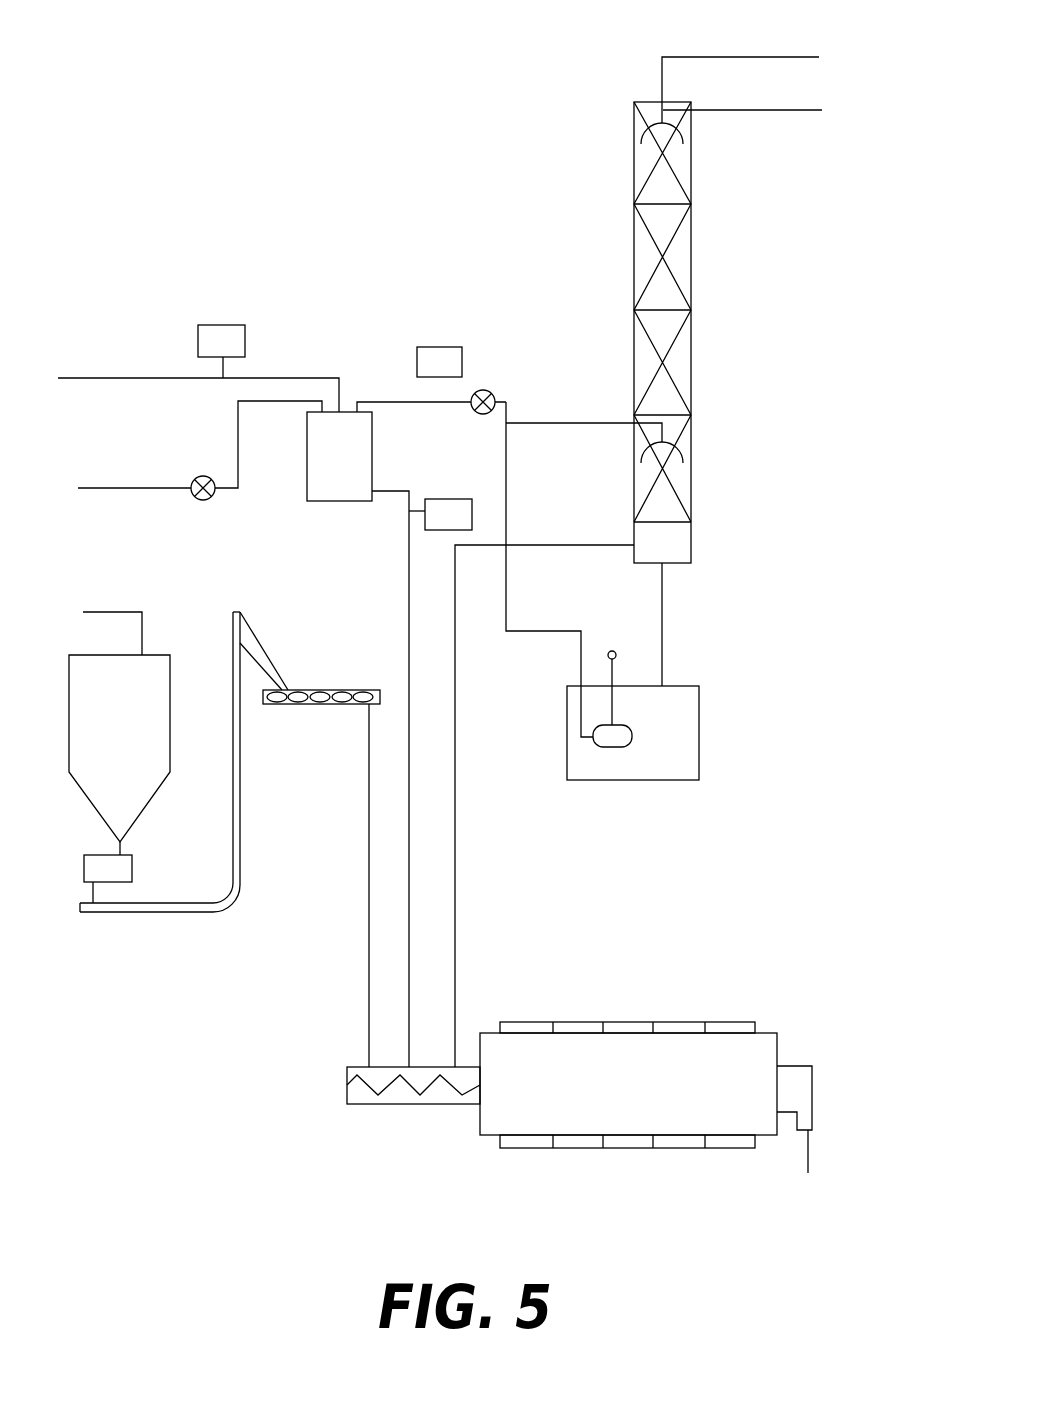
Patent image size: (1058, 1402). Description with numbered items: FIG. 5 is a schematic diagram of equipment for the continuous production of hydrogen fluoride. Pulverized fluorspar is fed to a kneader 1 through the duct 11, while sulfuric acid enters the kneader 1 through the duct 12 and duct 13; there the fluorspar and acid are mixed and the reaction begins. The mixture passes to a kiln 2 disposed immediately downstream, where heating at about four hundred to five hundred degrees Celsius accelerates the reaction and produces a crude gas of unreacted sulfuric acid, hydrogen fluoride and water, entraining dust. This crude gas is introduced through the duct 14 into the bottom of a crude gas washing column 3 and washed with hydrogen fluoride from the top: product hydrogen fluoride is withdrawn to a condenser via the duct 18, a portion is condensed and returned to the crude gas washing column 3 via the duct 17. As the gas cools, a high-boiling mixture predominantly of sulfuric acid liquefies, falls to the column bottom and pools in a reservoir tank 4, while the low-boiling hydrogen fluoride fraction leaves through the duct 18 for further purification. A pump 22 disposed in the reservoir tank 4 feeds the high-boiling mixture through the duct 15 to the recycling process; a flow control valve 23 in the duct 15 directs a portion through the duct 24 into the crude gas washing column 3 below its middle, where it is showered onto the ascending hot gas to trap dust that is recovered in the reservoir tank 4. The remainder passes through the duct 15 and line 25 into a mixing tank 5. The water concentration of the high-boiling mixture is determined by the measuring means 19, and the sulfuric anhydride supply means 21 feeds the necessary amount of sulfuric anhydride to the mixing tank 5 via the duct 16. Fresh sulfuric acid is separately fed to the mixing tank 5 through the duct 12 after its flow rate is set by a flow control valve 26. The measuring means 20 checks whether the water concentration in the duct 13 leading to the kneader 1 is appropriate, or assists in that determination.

The kneader 1 is at (400, 1090).
The kiln 2 is at (760, 1050).
The crude gas washing column 3 is at (691, 362).
The reservoir tank 4 is at (685, 738).
The mixing tank 5 is at (338, 490).
The duct 11 is at (368, 950).
The duct 12 is at (118, 488).
The duct 13 is at (412, 953).
The duct 14 is at (457, 848).
The duct 15 is at (506, 470).
The duct 16 is at (148, 378).
The duct 17 is at (776, 110).
The duct 18 is at (770, 56).
The means for measuring ultrasound propagation velocity and electrical conductivity 19 is at (458, 347).
The means for measuring ultrasound propagation velocity and viscosity 20 is at (440, 498).
The sulfuric anhydride supply means 21 is at (245, 333).
The pump 22 is at (607, 750).
The flow control valve 23 is at (493, 393).
The duct 24 is at (562, 423).
The line 25 is at (378, 400).
The flow control valve 26 is at (212, 498).